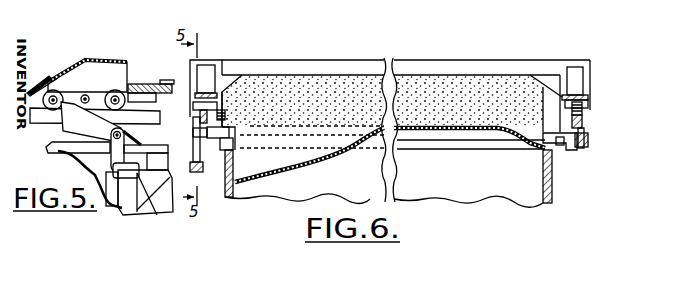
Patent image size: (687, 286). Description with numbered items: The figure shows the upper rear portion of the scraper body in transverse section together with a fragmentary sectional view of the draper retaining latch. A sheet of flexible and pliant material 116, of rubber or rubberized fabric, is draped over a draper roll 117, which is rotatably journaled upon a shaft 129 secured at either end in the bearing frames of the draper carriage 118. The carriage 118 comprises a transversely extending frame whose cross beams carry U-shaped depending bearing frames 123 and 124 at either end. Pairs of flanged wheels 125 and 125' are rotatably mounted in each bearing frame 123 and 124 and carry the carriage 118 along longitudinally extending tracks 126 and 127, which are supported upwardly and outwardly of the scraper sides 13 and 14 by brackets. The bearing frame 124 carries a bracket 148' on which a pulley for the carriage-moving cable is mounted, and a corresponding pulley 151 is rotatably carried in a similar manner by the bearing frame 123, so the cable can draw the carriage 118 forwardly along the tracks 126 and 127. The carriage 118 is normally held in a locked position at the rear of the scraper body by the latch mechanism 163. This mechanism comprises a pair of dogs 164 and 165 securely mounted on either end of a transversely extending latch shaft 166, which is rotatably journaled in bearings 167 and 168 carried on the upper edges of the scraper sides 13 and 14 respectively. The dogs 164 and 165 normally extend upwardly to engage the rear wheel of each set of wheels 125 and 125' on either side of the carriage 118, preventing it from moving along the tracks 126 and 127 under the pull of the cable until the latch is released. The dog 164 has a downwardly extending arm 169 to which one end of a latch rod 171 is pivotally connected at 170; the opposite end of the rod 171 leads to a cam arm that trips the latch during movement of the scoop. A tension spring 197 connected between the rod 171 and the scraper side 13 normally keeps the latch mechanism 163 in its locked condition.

In FIG. 5, the scraper side 13 is at (118, 208).
In FIG. 6, the scraper side 13 is at (231, 217).
In FIG. 6, the scraper side 14 is at (554, 200).
In FIG. 6, the sheet of flexible and pliant material 116 is at (306, 166).
In FIG. 6, the draper roll 117 is at (229, 106).
In FIG. 6, the carriage 118 is at (346, 44).
In FIG. 5, the bearing frame 123 is at (126, 61).
In FIG. 6, the bearing frame 123 is at (204, 58).
In FIG. 6, the bearing frame 124 is at (578, 61).
In FIG. 5, the flanged wheel 125 is at (46, 70).
In FIG. 5, the flanged wheel 125' is at (84, 87).
In FIG. 6, the flanged wheel 125' is at (424, 107).
In FIG. 5, the track 126 is at (45, 121).
In FIG. 6, the track 126 is at (229, 128).
In FIG. 6, the track 127 is at (588, 117).
In FIG. 5, the shaft 129 is at (85, 95).
In FIG. 6, the bracket 148' is at (599, 86).
In FIG. 5, the pulley 151 is at (140, 82).
In FIG. 5, the latch mechanism 163 is at (77, 147).
In FIG. 5, the dog 164 is at (58, 125).
In FIG. 6, the dog 164 is at (193, 114).
In FIG. 6, the dog 165 is at (588, 127).
In FIG. 5, the latch shaft 166 is at (86, 168).
In FIG. 6, the latch shaft 166 is at (465, 140).
In FIG. 6, the bearing 167 is at (233, 141).
In FIG. 6, the bearing 168 is at (560, 148).
In FIG. 5, the arm 169 is at (133, 126).
In FIG. 6, the arm 169 is at (231, 151).
In FIG. 5, the pivotal connection 170 is at (110, 208).
In FIG. 5, the latch rod 171 is at (110, 220).
In FIG. 6, the latch rod 171 is at (231, 187).
In FIG. 6, the tension spring 197 is at (446, 60).